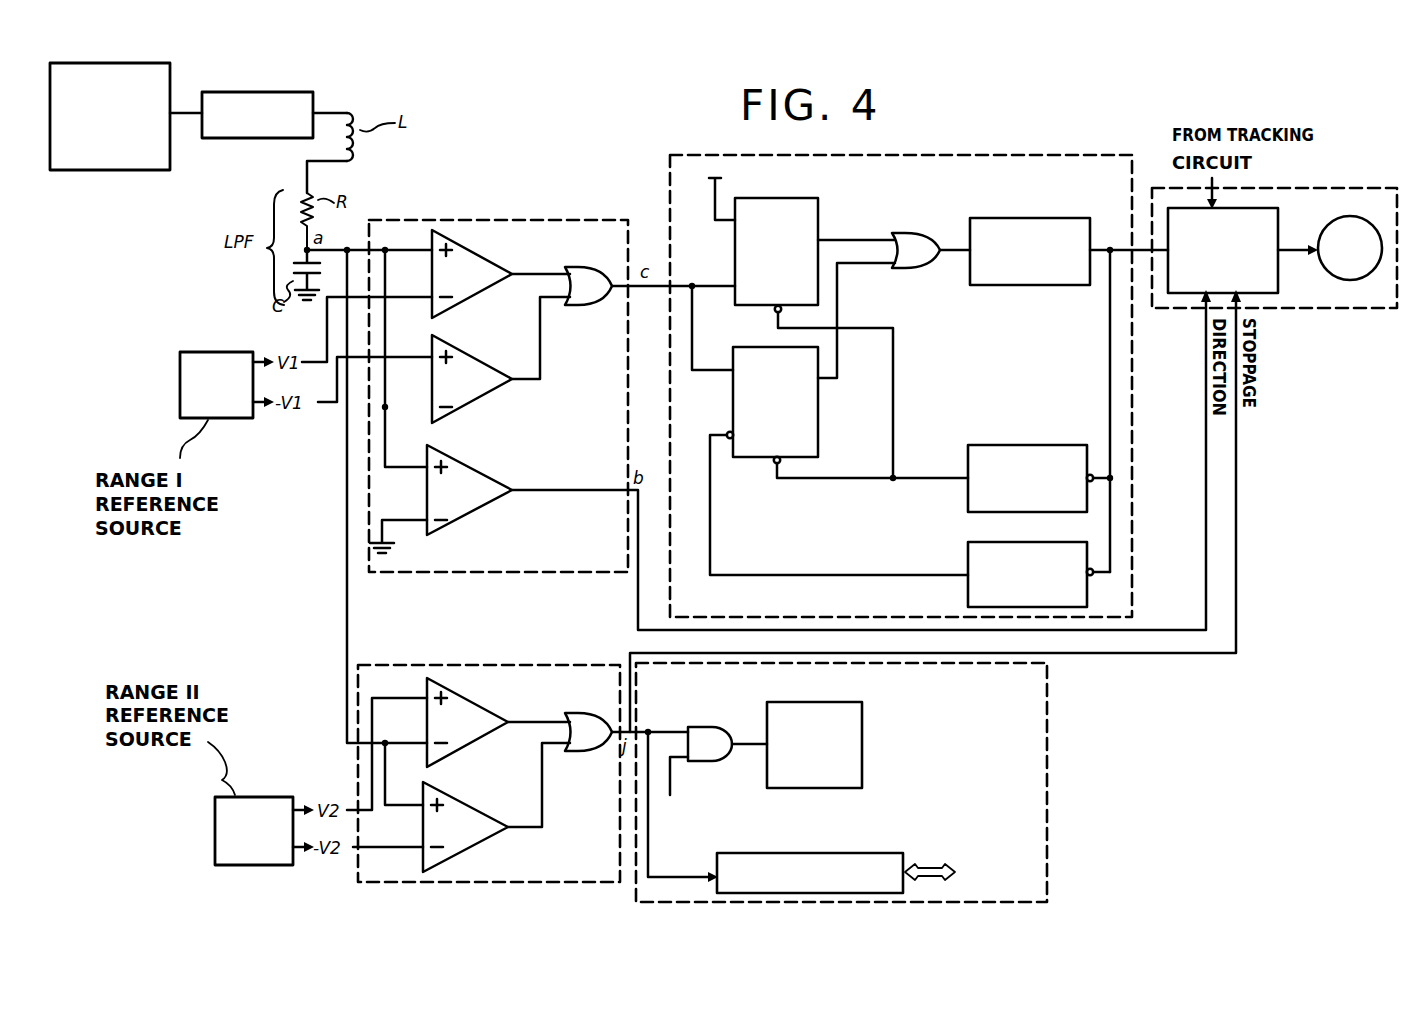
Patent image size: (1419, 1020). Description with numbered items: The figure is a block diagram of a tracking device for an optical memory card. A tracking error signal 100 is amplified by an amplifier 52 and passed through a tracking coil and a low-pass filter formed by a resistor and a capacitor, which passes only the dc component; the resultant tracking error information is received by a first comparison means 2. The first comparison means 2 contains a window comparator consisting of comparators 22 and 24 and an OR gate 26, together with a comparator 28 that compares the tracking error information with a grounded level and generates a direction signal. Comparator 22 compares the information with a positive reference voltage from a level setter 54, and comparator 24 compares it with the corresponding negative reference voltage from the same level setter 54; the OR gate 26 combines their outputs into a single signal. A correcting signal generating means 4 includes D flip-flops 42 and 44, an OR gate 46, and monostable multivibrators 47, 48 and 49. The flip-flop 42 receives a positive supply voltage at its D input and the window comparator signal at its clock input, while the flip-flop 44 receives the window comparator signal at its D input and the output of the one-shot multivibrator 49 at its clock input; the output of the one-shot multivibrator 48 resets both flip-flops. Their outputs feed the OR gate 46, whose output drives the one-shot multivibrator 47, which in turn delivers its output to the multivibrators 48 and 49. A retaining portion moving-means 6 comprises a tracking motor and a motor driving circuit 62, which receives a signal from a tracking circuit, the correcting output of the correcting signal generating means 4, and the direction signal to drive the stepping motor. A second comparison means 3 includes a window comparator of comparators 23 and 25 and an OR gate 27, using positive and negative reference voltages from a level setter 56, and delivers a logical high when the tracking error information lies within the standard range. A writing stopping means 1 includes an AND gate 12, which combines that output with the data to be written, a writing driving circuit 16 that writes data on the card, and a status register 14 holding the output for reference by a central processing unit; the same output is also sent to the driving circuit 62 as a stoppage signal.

The tracking error signal 100 is at (115, 171).
The amplifier 52 is at (244, 140).
The level setter 54 is at (215, 350).
The level setter 56 is at (255, 796).
The first comparison means 2 is at (498, 219).
The second comparison means 3 is at (499, 664).
The correcting signal generating means 4 is at (670, 178).
The retaining portion moving-means 6 is at (1345, 188).
The writing stopping means 1 is at (1047, 737).
The comparator 22 is at (492, 262).
The comparator 24 is at (483, 367).
The comparator 28 is at (488, 472).
The OR gate 26 is at (588, 270).
The comparator 23 is at (490, 712).
The comparator 25 is at (486, 820).
The OR gate 27 is at (584, 714).
The D flip-flop 42 is at (808, 198).
The D flip-flop 44 is at (818, 452).
The OR gate 46 is at (924, 233).
The monostable multivibrator 47 is at (1031, 217).
The monostable multivibrator 48 is at (1014, 444).
The monostable multivibrator 49 is at (996, 543).
The motor driving circuit 62 is at (1280, 222).
The AND gate 12 is at (705, 727).
The status register 14 is at (834, 853).
The writing driving circuit 16 is at (822, 702).